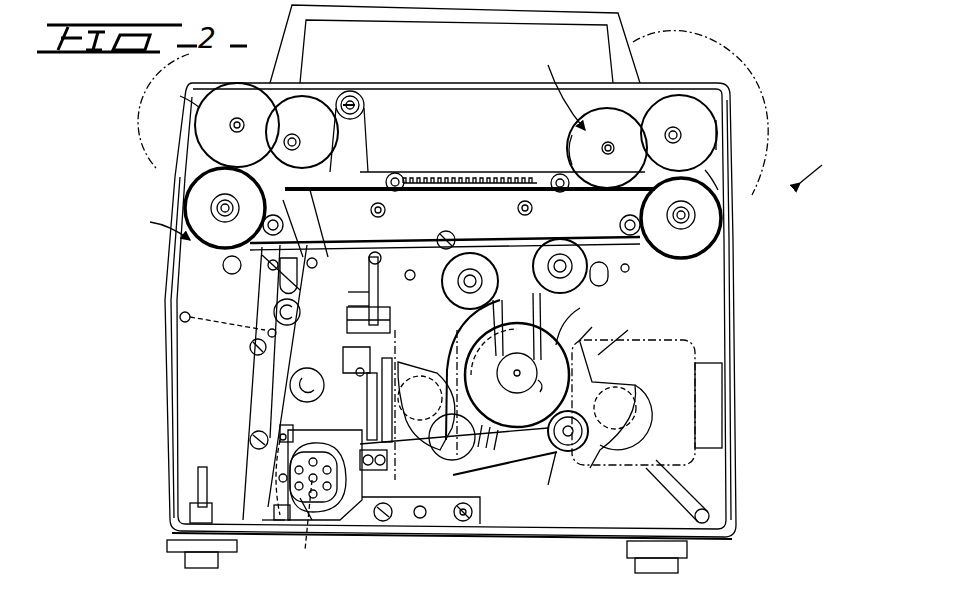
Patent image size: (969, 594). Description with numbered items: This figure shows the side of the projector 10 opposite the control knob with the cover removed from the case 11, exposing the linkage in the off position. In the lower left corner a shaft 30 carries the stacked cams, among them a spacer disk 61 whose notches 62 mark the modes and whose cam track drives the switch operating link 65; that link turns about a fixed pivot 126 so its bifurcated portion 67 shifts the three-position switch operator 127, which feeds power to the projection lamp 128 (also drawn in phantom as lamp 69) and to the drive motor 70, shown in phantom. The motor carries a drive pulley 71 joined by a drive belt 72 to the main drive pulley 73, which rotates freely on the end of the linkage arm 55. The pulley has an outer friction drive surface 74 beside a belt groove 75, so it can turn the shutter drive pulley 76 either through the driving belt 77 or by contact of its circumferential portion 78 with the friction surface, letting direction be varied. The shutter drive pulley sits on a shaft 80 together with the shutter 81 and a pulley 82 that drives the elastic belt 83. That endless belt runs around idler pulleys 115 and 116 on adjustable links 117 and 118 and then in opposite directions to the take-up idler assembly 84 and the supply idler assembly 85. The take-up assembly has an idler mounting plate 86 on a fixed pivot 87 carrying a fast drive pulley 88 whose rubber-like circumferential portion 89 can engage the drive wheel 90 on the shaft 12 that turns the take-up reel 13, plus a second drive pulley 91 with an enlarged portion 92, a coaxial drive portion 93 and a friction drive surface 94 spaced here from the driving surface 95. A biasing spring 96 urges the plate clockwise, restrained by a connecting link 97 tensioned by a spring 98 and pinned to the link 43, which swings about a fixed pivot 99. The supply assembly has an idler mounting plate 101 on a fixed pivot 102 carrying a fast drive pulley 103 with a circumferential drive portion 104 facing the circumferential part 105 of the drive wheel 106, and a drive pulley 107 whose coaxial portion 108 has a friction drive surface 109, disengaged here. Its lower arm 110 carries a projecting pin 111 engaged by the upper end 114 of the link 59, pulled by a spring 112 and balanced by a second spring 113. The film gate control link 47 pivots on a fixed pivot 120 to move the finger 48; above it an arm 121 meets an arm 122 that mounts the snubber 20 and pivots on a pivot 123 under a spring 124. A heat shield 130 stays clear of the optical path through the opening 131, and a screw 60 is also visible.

The projector 10 is at (817, 165).
The case 11 is at (733, 269).
The shaft 12 is at (675, 128).
The take-up reel 13 is at (752, 75).
The snubber 20 is at (360, 320).
The shaft 30 is at (312, 522).
The link 43 is at (250, 348).
The film gate control link 47 is at (356, 357).
The finger 48 is at (387, 405).
The linkage arm 55 is at (420, 520).
The link 59 is at (294, 330).
The screw 60 is at (250, 440).
The spacer disk 61 is at (345, 423).
The notches 62 is at (352, 512).
The switch operating linkage member 65 is at (272, 522).
The bifurcated portion 67 is at (282, 522).
The projection lamp 69 is at (493, 366).
The drive motor 70 is at (700, 345).
The drive pulley 71 is at (626, 405).
The drive belt 72 is at (622, 430).
The main drive pulley 73 is at (570, 453).
The outer friction drive surface 74 is at (612, 470).
The belt groove 75 is at (548, 478).
The shutter drive pulley 76 is at (578, 321).
The driving belt 77 is at (458, 453).
The circumferential portion 78 is at (594, 328).
The shaft 80 is at (518, 380).
The shutter 81 is at (624, 335).
The pulley 82 is at (547, 392).
The elastic belt 83 is at (415, 240).
The take-up idler assembly 84 is at (559, 87).
The supply idler assembly 85 is at (157, 221).
The idler mounting plate 86 is at (630, 268).
The fixed pivot 87 is at (620, 225).
The fast drive pulley 88 is at (722, 220).
The circumferential portion 89 is at (715, 178).
The drive wheel 90 is at (700, 120).
The second drive pulley 91 is at (592, 128).
The enlarged portion 92 is at (580, 150).
The coaxial drive portion 93 is at (608, 152).
The friction drive surface 94 is at (608, 142).
The circumferential driving surface 95 is at (722, 140).
The biasing spring 96 is at (528, 215).
The connecting link 97 is at (472, 175).
The spring 98 is at (428, 172).
The fixed pivot 99 is at (255, 378).
The idler mounting plate 101 is at (292, 196).
The fixed pivot 102 is at (309, 228).
The fast drive pulley 103 is at (205, 190).
The circumferential drive portion 104 is at (262, 232).
The circumferential part 105 is at (180, 96).
The drive wheel 106 is at (236, 103).
The drive pulley 107 is at (295, 105).
The coaxial portion 108 is at (283, 154).
The friction drive surface 109 is at (292, 134).
The lower arm 110 is at (226, 270).
The projecting pin 111 is at (266, 259).
The spring 112 is at (185, 323).
The second spring 113 is at (393, 210).
The upper end 114 is at (298, 270).
The idler pulley 115 is at (460, 300).
The idler pulley 116 is at (540, 255).
The adjustable link 117 is at (452, 240).
The adjustable link 118 is at (600, 280).
The fixed pivot 120 is at (364, 105).
The arm 121 is at (385, 291).
The arm 122 is at (366, 297).
The pivot 123 is at (375, 252).
The spring 124 is at (422, 280).
The fixed pivot 126 is at (304, 402).
The three-position switch operator 127 is at (305, 526).
The projection lamp 128 is at (465, 524).
The heat shield 130 is at (445, 432).
The opening 131 is at (426, 396).